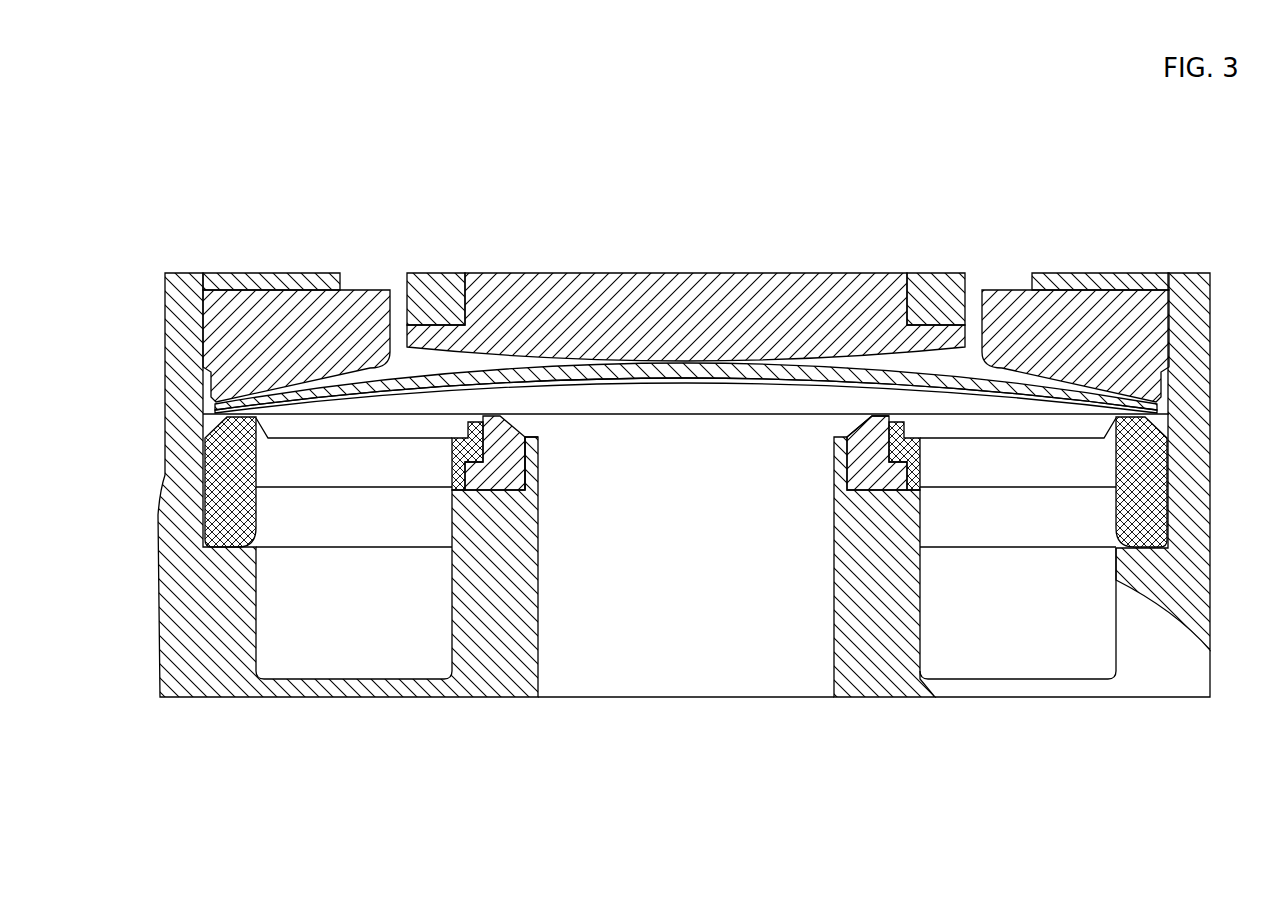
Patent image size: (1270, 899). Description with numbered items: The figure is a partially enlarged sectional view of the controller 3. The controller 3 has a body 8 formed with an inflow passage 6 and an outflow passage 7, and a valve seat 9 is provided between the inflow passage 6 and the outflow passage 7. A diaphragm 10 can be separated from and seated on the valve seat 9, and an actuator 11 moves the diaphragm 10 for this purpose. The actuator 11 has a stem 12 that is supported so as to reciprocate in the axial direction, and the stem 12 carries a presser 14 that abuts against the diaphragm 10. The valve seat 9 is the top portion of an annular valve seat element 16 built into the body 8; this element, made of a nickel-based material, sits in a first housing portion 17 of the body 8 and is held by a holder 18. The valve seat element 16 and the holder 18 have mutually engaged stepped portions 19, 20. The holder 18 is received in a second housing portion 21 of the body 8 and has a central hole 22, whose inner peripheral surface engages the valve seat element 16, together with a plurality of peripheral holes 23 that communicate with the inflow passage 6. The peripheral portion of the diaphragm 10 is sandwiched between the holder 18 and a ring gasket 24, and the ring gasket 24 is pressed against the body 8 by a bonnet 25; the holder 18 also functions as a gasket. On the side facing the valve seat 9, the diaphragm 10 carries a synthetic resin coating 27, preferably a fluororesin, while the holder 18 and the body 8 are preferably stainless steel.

The controller 3 is at (229, 191).
The inflow passage 6 is at (750, 610).
The outflow passage 7 is at (1143, 657).
The body 8 is at (208, 697).
The valve seat 9 is at (492, 414).
The diaphragm 10 is at (818, 363).
The actuator 11 is at (433, 271).
The stem 12 is at (948, 272).
The presser 14 is at (578, 292).
The valve seat element 16 is at (505, 458).
The first housing portion 17 is at (876, 478).
The holder 18 is at (920, 452).
The stepped portion 19 is at (886, 465).
The stepped portion 20 is at (455, 452).
The second housing portion 21 is at (262, 537).
The central hole 22 is at (490, 493).
The peripheral holes 23 is at (343, 470).
The ring gasket 24 is at (303, 337).
The bonnet 25 is at (1086, 300).
The synthetic resin coating 27 is at (773, 383).